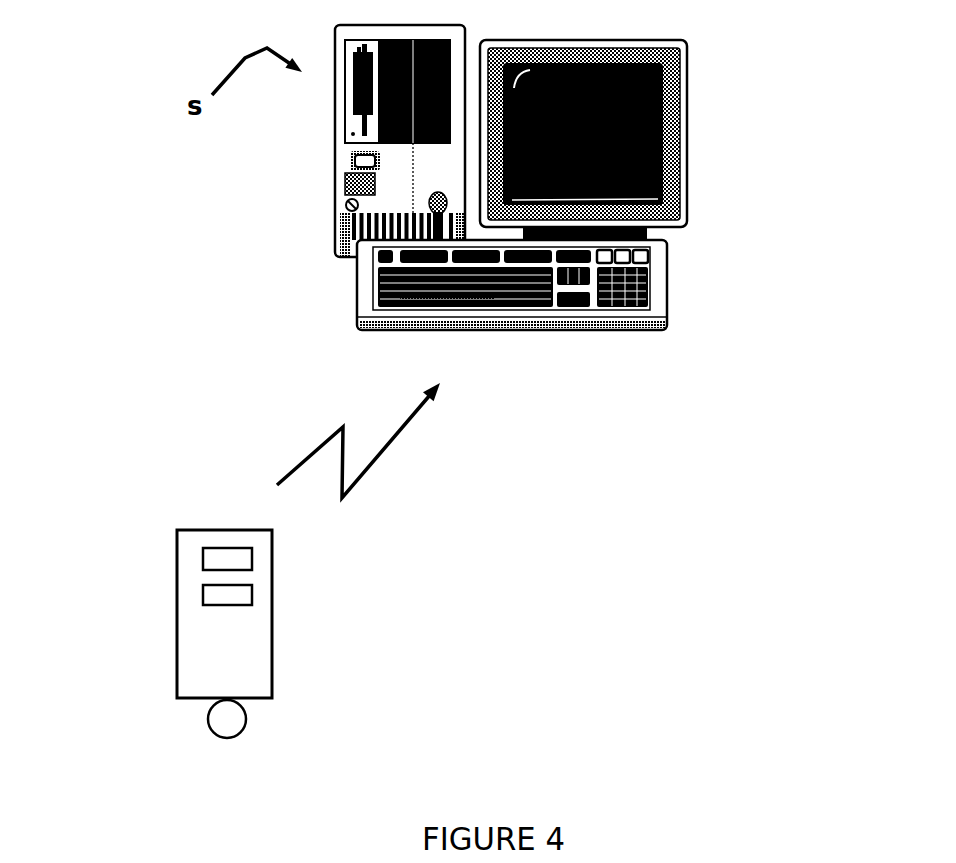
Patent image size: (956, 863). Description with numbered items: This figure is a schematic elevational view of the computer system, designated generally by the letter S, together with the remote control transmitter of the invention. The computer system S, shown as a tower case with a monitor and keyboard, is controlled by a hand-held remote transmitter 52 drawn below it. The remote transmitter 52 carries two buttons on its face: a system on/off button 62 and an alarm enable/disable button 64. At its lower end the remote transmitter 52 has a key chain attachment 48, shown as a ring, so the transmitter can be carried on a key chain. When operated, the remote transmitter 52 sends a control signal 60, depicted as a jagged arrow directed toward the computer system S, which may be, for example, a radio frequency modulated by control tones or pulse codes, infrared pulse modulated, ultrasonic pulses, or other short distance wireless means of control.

The key chain attachment 48 is at (233, 725).
The remote transmitter 52 is at (220, 648).
The control signal 60 is at (390, 445).
The system on/off button 62 is at (247, 560).
The alarm enable/disable button 64 is at (243, 598).